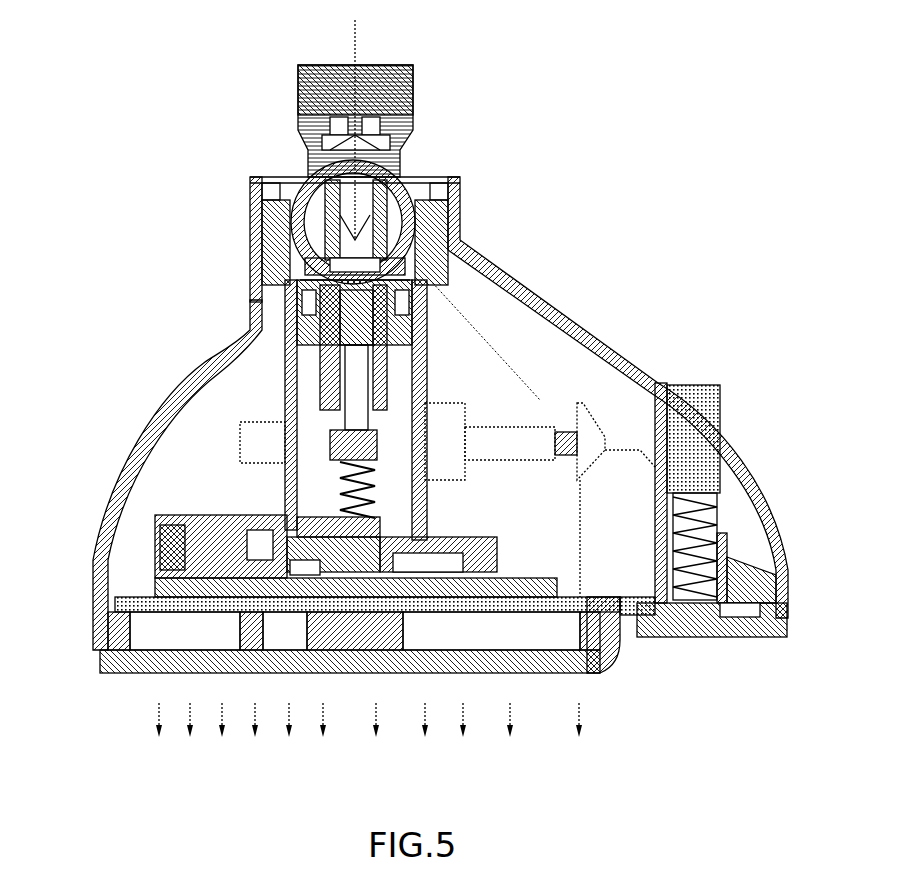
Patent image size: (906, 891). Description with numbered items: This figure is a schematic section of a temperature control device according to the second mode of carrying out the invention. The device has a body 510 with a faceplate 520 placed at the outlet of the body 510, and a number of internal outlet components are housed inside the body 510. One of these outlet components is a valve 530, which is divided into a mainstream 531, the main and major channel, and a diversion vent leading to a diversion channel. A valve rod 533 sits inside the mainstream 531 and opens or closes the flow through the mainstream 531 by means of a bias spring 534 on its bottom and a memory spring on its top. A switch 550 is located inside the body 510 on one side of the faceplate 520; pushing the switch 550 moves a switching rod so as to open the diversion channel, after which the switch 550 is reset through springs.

The body 510 is at (590, 333).
The faceplate 520 is at (137, 675).
The valve 530 is at (427, 347).
The mainstream 531 is at (313, 460).
The valve rod 533 is at (377, 417).
The bias spring 534 is at (370, 507).
The switch 550 is at (700, 638).